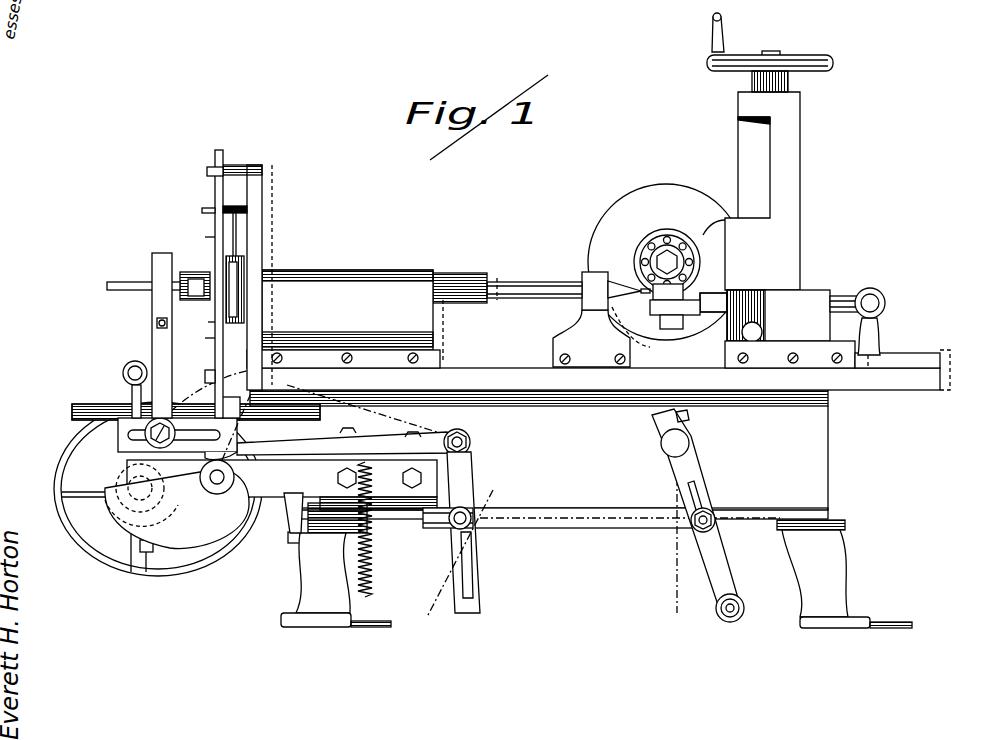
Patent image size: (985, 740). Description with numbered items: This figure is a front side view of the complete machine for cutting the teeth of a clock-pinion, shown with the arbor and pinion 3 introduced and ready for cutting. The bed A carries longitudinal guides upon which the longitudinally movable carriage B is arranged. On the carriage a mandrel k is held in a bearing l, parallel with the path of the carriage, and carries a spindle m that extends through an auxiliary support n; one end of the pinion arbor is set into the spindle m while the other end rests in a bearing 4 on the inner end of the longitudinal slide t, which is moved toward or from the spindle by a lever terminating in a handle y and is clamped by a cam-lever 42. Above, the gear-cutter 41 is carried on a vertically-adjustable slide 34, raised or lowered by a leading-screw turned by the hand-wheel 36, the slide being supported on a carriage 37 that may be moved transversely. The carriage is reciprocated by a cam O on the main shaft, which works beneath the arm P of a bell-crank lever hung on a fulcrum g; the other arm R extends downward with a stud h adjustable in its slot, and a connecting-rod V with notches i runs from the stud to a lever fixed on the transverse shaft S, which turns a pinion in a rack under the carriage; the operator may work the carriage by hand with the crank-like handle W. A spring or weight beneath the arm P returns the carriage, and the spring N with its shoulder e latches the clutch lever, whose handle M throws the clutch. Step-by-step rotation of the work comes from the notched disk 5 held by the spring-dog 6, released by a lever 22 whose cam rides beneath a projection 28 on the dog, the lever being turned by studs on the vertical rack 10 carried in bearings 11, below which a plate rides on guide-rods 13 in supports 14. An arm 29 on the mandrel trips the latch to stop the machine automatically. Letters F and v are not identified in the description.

The hand-wheel 36 is at (770, 52).
The carriage 37 is at (797, 196).
The gear-cutter 41 is at (672, 240).
The vertically-adjustable slide 34 is at (714, 240).
The bearing 4 is at (667, 264).
The pinion 3 is at (655, 292).
The cam-lever 42 is at (752, 332).
The longitudinal slide t is at (765, 310).
The handle y is at (885, 328).
The auxiliary support n is at (601, 319).
The spindle m is at (534, 282).
The mandrel k is at (465, 279).
The bearing l is at (332, 291).
The carriage B is at (600, 370).
The bed A is at (539, 454).
The spring-dog 6 is at (235, 200).
The disk 5 is at (239, 234).
The projection 28 is at (202, 205).
The arm or stop 29 is at (158, 286).
The lever 22 is at (205, 323).
The vertical rack 10 is at (215, 364).
The bearings 11 is at (209, 273).
The spring N is at (162, 335).
The handle M is at (125, 389).
The fly wheel F is at (146, 489).
The arm P is at (287, 439).
The shoulder e is at (217, 477).
The cam O is at (177, 506).
The vertical guide-rods 13 is at (215, 521).
The supports 14 is at (293, 513).
The fulcrum g is at (465, 441).
The arm R is at (463, 532).
The stud h is at (455, 526).
The notches i is at (462, 548).
The connecting rod v is at (626, 518).
The shaft S is at (675, 443).
The connecting-rod V is at (737, 467).
The crank-like handle W is at (738, 607).